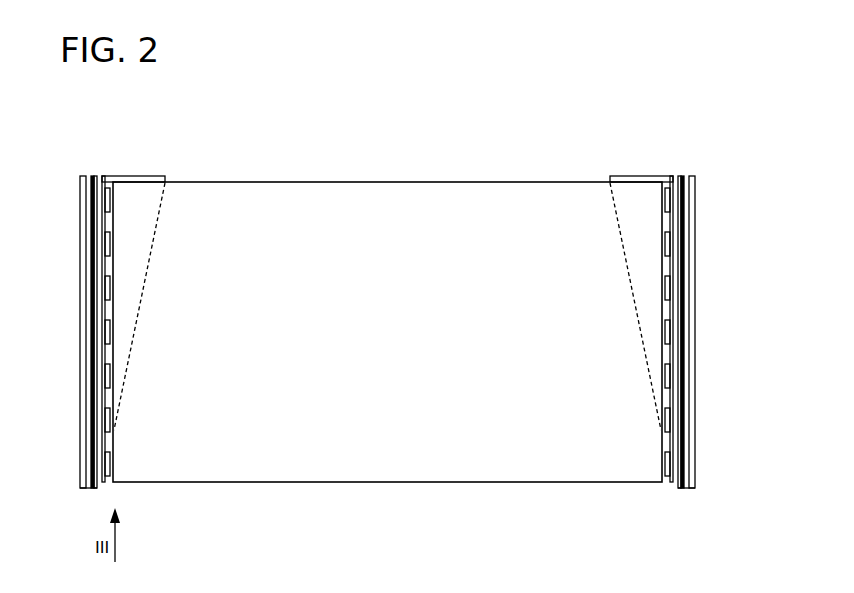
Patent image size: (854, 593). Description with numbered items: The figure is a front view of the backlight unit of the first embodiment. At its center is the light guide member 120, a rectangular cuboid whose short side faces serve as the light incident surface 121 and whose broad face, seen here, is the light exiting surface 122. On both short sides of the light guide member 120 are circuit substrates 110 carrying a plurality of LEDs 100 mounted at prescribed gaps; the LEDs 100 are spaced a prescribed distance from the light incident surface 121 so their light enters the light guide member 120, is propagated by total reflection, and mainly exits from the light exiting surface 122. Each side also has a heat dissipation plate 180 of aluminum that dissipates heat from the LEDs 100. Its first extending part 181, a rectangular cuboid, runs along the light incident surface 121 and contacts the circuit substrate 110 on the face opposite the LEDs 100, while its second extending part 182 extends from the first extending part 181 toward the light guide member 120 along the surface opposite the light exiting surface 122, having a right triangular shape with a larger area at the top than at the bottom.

The LEDs 100 is at (104, 378).
The circuit substrates 110 is at (93, 337).
The light guide member 120 is at (268, 200).
The light incident surface 121 is at (106, 267).
The light exiting surface 122 is at (442, 236).
The heat dissipation plate 180 is at (157, 116).
The first extending part 181 is at (85, 172).
The second extending part 182 is at (121, 171).